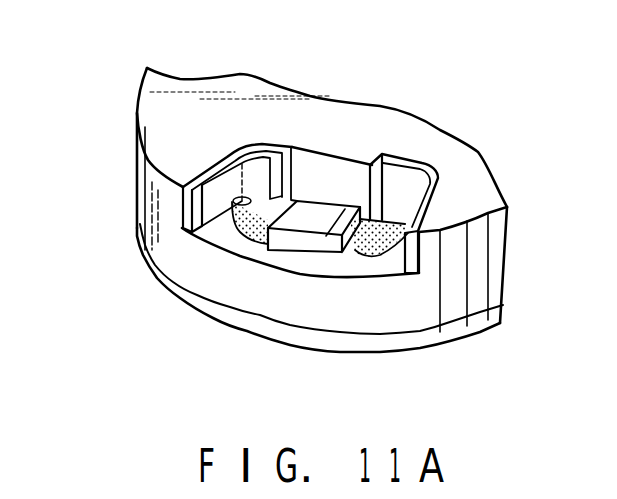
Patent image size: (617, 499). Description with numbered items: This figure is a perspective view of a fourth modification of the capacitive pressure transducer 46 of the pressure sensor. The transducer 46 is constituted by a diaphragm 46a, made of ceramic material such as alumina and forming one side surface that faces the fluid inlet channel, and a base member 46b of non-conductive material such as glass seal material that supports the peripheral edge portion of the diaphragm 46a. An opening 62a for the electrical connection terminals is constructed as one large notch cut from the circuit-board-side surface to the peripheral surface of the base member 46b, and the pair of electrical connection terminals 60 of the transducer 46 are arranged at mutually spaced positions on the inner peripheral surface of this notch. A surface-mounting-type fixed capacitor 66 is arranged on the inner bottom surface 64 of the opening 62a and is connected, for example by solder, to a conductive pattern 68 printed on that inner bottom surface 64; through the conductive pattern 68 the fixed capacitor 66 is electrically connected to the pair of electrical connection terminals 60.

The capacitive pressure transducer 46 is at (505, 259).
The diaphragm 46a is at (473, 325).
The base member 46b is at (150, 198).
The electrical connection terminals 60 is at (253, 151).
The opening 62a is at (323, 177).
The inner bottom surface 64 is at (212, 240).
The fixed capacitor 66 is at (310, 217).
The conductive pattern 68 is at (246, 248).